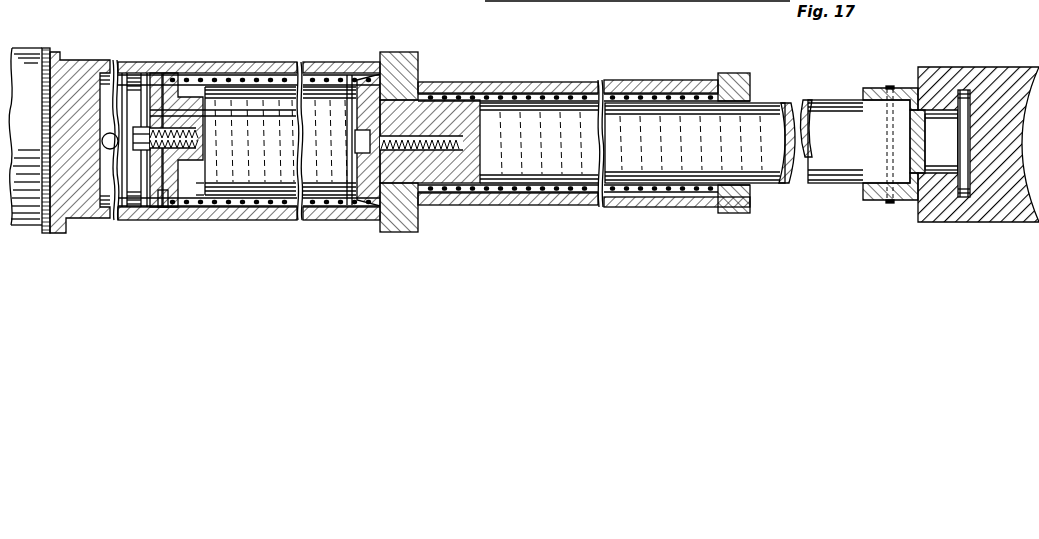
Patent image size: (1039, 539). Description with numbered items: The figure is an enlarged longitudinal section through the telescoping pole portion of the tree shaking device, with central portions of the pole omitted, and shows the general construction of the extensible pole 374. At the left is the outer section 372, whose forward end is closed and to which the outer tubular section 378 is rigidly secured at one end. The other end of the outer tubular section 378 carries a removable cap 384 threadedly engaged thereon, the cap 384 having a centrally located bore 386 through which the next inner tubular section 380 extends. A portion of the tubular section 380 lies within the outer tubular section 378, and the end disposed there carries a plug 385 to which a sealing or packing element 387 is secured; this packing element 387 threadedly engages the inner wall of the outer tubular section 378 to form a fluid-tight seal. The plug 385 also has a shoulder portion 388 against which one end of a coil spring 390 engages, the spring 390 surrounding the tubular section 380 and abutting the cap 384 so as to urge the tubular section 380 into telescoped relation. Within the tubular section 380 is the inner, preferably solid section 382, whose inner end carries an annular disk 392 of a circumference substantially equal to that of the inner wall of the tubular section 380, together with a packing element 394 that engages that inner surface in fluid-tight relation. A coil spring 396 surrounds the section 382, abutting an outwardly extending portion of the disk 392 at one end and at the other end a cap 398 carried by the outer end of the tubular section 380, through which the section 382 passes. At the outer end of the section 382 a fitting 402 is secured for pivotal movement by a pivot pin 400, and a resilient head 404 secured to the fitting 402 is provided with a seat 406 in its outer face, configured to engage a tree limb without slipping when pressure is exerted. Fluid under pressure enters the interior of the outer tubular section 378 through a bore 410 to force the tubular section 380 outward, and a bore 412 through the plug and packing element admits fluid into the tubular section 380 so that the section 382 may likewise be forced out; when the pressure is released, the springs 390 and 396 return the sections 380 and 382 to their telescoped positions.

The outer section 372 is at (29, 60).
The extensible pole 374 is at (331, 60).
The outer tubular section 378 is at (207, 62).
The next inner tubular section 380 is at (489, 83).
The inner section 382 is at (826, 106).
The removable cap 384 is at (418, 70).
The plug 385 is at (197, 188).
The bore 386 is at (418, 210).
The sealing or packing element 387 is at (163, 200).
The shoulder portion 388 is at (176, 80).
The coil spring 390 is at (267, 76).
The annular disk 392 is at (393, 179).
The packing element 394 is at (372, 155).
The coil spring 396 is at (563, 92).
The cap 398 is at (735, 65).
The pivot pin 400 is at (890, 88).
The fitting 402 is at (907, 196).
The resilient head 404 is at (990, 67).
The seat 406 is at (971, 122).
The bore 410 is at (107, 143).
The bore 412 is at (205, 112).